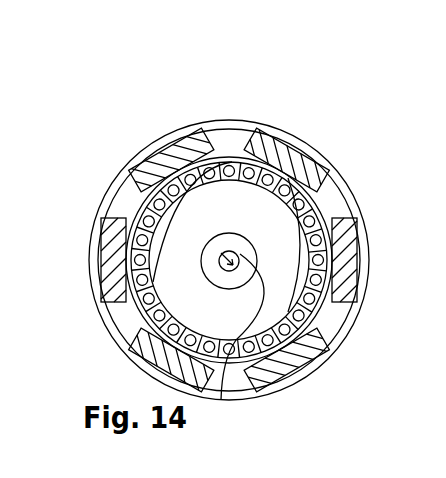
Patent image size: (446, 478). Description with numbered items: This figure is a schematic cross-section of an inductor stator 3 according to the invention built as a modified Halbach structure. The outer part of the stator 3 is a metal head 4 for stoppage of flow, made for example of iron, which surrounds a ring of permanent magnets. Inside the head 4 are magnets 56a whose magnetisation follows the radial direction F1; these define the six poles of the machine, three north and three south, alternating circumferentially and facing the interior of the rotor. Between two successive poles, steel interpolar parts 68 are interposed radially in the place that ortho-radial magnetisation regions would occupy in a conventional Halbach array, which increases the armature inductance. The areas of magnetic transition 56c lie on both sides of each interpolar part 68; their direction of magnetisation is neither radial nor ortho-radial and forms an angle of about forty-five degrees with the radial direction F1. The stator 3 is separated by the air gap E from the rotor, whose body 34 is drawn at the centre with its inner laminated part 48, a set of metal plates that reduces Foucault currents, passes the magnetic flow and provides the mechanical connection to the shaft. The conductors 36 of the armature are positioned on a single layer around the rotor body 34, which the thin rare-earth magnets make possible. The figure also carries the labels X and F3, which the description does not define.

The inductor stator 3 is at (101, 157).
The metal head for stoppage of flow 4 is at (285, 163).
The body of the rotor 34 is at (292, 313).
The conductors 36 is at (322, 232).
The inner laminated part 48 is at (322, 284).
The magnets with radial magnetisation 56a is at (183, 173).
The magnetic transition magnets 56c is at (215, 172).
The steel interpolar parts 68 is at (343, 217).
The air gap E is at (333, 201).
The axis X is at (221, 400).
The radial direction F1 is at (229, 110).
The rotational force F3 is at (129, 149).